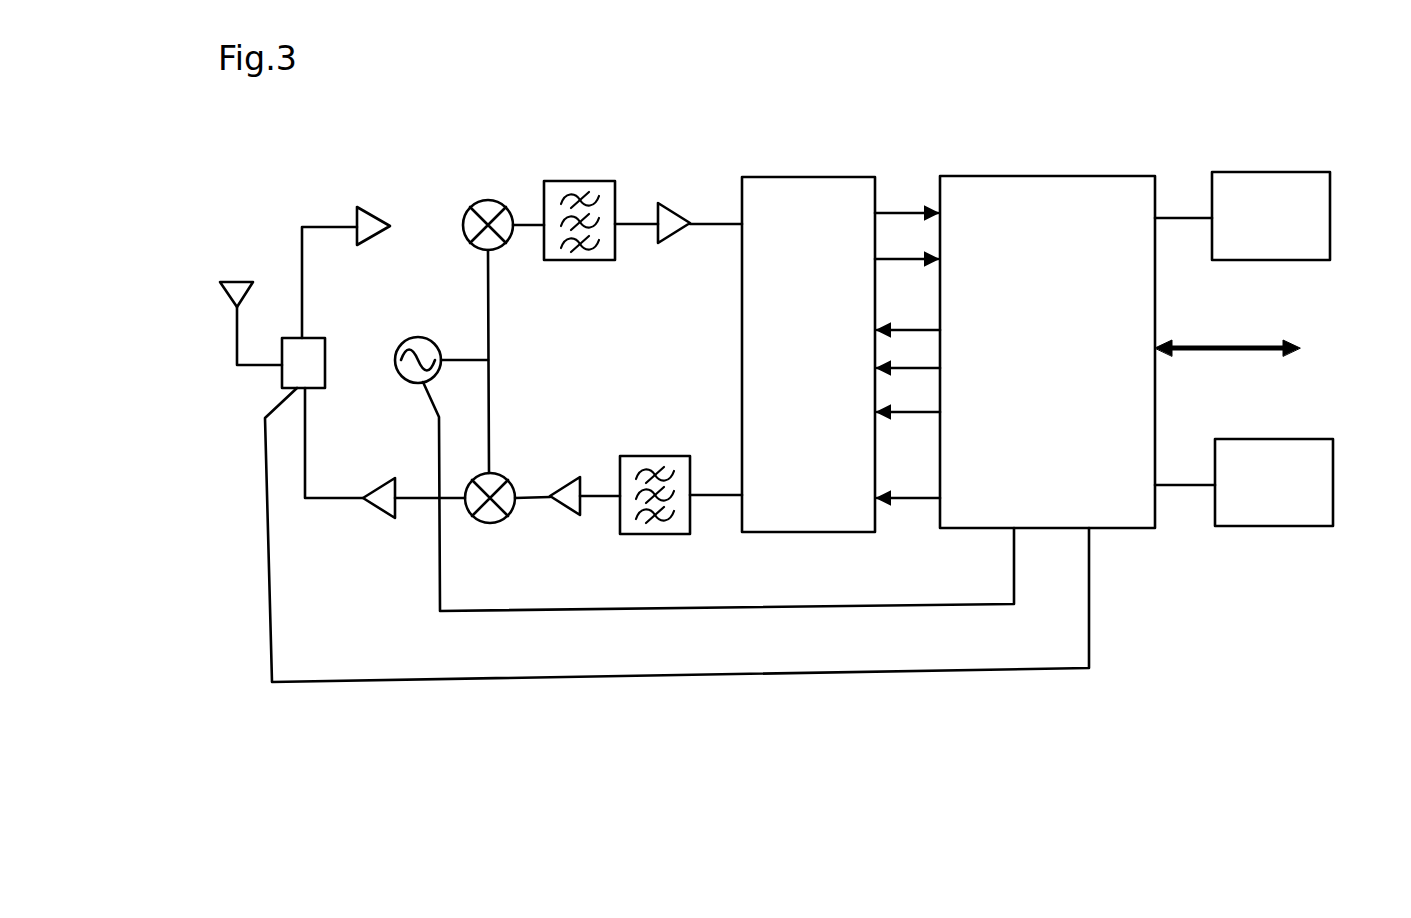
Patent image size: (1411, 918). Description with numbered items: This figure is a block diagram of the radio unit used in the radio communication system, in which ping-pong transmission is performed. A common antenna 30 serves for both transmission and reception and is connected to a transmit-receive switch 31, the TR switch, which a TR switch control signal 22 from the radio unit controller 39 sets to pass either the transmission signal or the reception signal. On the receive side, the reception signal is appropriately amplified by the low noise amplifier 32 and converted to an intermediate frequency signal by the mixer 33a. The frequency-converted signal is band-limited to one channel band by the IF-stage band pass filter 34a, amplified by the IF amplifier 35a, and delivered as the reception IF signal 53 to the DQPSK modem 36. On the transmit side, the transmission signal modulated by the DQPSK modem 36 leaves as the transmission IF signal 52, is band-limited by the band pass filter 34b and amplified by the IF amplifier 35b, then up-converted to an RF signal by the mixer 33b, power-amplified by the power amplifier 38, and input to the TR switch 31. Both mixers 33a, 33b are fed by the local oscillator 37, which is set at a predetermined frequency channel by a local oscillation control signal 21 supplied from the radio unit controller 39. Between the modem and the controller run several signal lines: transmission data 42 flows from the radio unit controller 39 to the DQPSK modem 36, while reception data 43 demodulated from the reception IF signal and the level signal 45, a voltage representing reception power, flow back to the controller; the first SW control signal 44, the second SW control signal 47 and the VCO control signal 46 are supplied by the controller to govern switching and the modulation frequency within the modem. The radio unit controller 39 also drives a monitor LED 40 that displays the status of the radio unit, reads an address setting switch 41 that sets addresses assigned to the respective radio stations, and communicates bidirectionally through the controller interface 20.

The controller interface 20 is at (1278, 344).
The local oscillation control signal 21 is at (718, 496).
The TR switch control signal 22 is at (677, 535).
The antenna 30 is at (247, 280).
The transmit-receive switch 31 is at (314, 337).
The low noise amplifier 32 is at (366, 206).
The mixer 33a is at (492, 200).
The mixer 33b is at (503, 470).
The IF-stage band pass filter 34a is at (582, 180).
The band pass filter 34b is at (658, 455).
The IF amplifier 35a is at (671, 202).
The IF amplifier 35b is at (568, 477).
The DQPSK modem 36 is at (808, 176).
The local oscillator 37 is at (424, 337).
The power amplifier 38 is at (380, 522).
The radio unit controller 39 is at (1020, 175).
The monitor LED 40 is at (1266, 171).
The address setting switch 41 is at (1265, 527).
The transmission data 42 is at (908, 485).
The reception data 43 is at (906, 200).
The first SW control signal 44 is at (908, 356).
The level signal 45 is at (906, 246).
The VCO control signal 46 is at (908, 399).
The second SW control signal 47 is at (908, 317).
The transmission IF signal 52 is at (720, 492).
The reception IF signal 53 is at (705, 228).